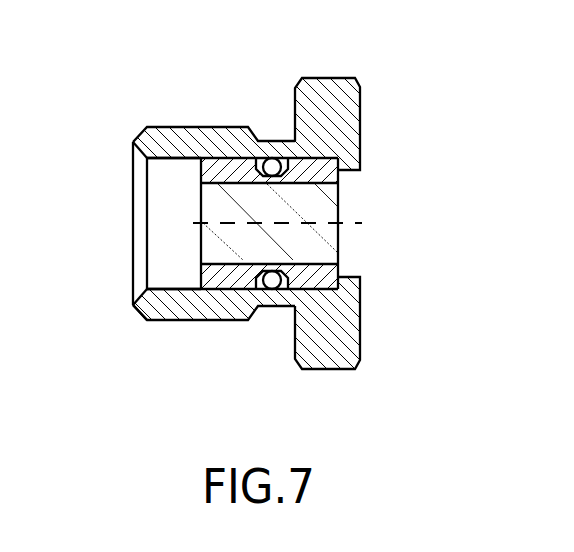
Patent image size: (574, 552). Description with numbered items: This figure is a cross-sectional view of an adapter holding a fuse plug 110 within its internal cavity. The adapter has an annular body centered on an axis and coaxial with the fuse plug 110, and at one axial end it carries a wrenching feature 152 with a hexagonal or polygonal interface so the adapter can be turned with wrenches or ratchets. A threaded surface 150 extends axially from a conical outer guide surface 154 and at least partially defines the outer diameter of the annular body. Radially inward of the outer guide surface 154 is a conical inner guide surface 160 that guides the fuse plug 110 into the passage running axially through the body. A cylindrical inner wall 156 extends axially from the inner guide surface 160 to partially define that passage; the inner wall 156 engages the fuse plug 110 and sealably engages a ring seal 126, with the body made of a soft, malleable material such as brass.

The fuse plug 110 is at (330, 273).
The ring seal 126 is at (272, 158).
The threaded surface 150 is at (198, 127).
The wrenching feature 152 is at (362, 357).
The outer guide surface 154 is at (140, 319).
The inner wall 156 is at (205, 289).
The inner guide surface 160 is at (135, 294).